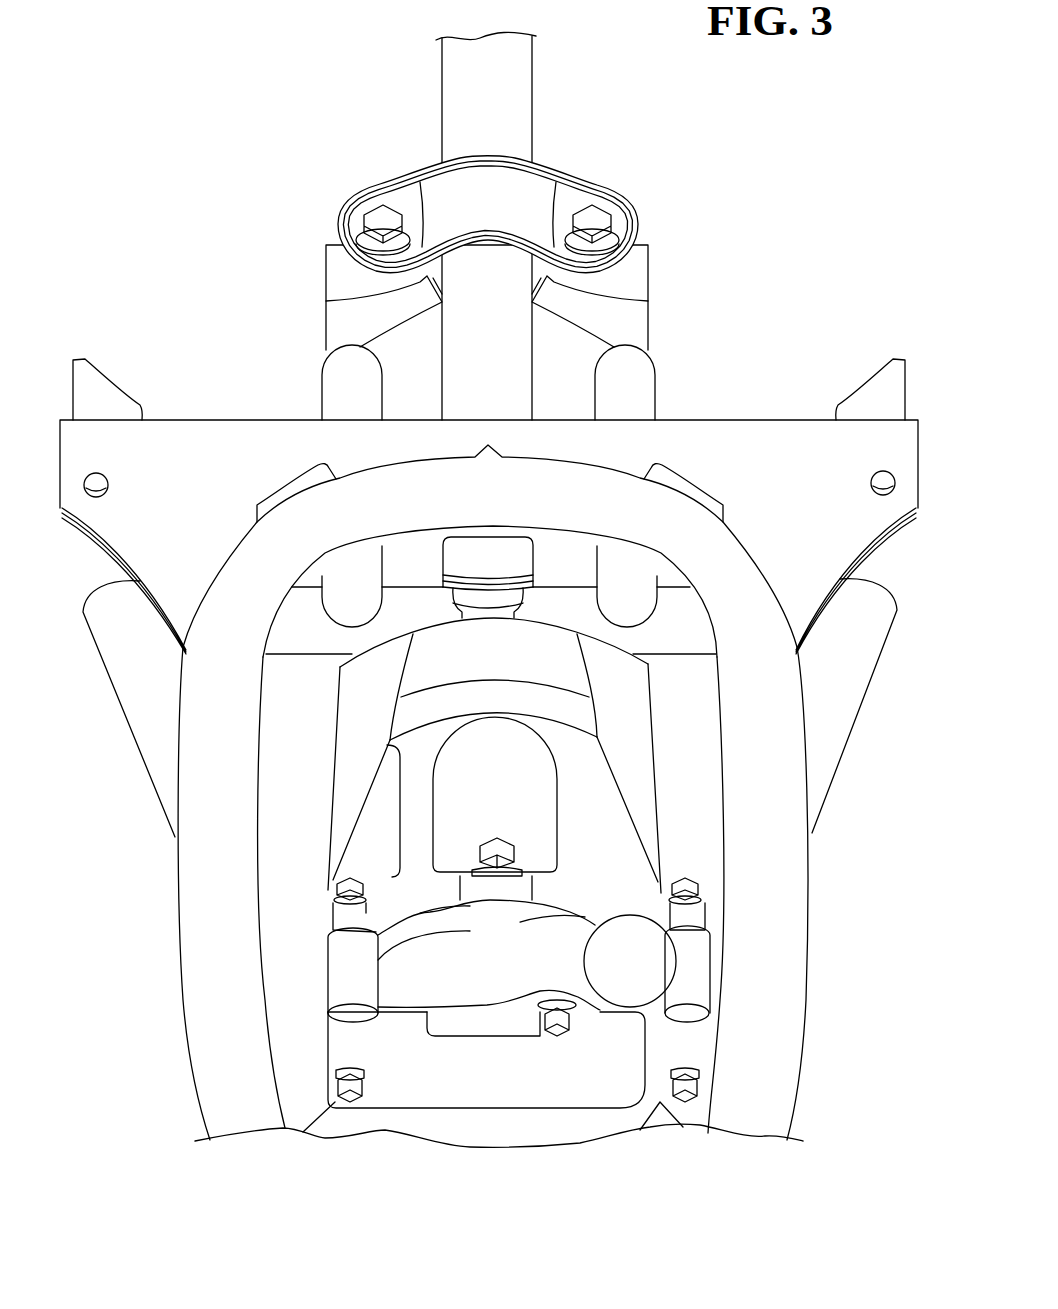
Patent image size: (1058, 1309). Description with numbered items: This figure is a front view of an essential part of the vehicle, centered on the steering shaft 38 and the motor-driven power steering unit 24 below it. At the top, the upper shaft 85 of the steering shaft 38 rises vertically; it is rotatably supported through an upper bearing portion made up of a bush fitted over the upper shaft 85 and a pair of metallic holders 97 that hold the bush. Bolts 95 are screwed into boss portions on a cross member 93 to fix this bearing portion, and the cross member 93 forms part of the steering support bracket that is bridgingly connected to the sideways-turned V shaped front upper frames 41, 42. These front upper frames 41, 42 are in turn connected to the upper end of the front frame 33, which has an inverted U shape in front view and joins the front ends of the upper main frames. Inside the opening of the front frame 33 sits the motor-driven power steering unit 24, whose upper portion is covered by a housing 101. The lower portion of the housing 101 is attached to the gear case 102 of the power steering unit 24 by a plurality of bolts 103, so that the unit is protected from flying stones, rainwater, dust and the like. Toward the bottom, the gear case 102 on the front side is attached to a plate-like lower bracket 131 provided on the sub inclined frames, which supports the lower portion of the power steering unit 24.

The steering shaft 38 is at (442, 77).
The upper shaft 85 is at (512, 105).
The metallic holders 97 is at (440, 187).
The bolts 95 is at (376, 220).
The cross member 93 is at (635, 290).
The front upper frame 42 is at (328, 386).
The front upper frame 41 is at (640, 386).
The front frame 33 is at (187, 745).
The housing 101 is at (385, 812).
The bolts 103 is at (340, 891).
The motor-driven power steering unit 24 is at (430, 1062).
The gear case 102 is at (493, 1088).
The lower bracket 131 is at (623, 1130).